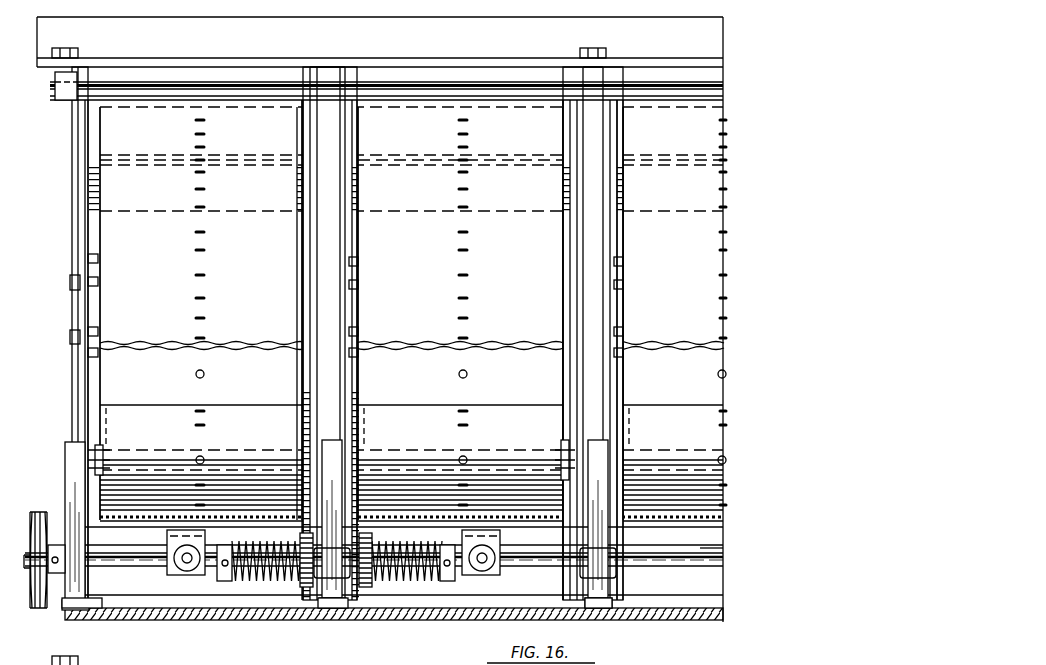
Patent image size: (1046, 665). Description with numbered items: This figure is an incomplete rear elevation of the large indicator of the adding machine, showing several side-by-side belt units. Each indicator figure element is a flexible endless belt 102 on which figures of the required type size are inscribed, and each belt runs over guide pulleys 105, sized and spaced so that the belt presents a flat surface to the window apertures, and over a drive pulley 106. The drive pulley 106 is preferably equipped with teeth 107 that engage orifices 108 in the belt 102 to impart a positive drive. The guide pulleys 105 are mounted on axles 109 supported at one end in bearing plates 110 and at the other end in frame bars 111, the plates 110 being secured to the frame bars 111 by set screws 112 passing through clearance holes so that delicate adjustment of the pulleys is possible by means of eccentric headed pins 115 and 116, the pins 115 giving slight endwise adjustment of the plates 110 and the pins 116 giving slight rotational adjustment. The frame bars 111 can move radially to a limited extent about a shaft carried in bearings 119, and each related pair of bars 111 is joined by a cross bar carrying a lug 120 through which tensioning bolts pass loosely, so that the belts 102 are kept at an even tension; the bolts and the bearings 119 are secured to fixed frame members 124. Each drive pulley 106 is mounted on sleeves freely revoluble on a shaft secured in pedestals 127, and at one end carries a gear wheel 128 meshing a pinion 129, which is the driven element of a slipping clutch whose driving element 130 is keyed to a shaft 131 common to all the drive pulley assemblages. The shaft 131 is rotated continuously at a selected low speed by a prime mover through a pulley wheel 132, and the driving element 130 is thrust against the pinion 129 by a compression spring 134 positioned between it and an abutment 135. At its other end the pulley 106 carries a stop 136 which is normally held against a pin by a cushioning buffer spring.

The flexible endless belt 102 is at (412, 310).
The guide pulley 105 is at (88, 76).
The drive pulley 106 is at (411, 463).
The teeth 107 is at (470, 433).
The orifices 108 is at (200, 270).
The axle 109 is at (240, 154).
The bearing plate 110 is at (72, 232).
The frame bar 111 is at (88, 134).
The set screw 112 is at (70, 190).
The eccentric headed pin 115 is at (98, 282).
The eccentric headed pin 116 is at (98, 258).
The bearing 119 is at (576, 68).
The lug 120 is at (168, 540).
The fixed frame member 124 is at (678, 626).
The pedestal 127 is at (68, 445).
The gear wheel 128 is at (302, 392).
The pinion 129 is at (350, 608).
The driving element 130 is at (305, 590).
The shaft 131 is at (712, 555).
The pulley wheel 132 is at (46, 512).
The compression spring 134 is at (263, 582).
The abutment 135 is at (216, 582).
The stop 136 is at (102, 448).